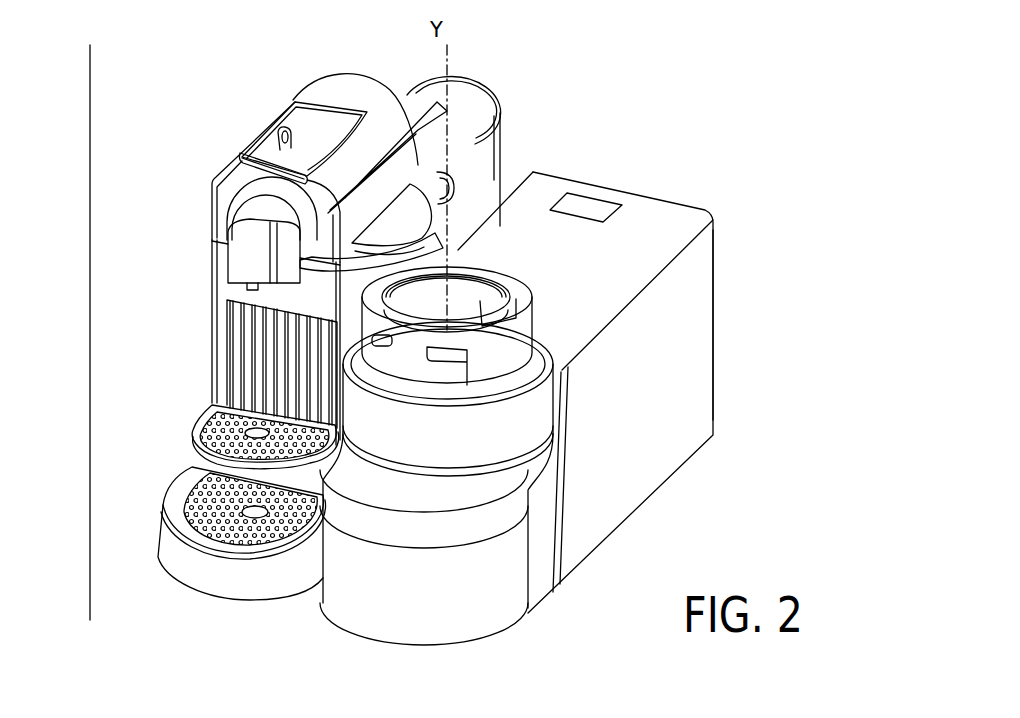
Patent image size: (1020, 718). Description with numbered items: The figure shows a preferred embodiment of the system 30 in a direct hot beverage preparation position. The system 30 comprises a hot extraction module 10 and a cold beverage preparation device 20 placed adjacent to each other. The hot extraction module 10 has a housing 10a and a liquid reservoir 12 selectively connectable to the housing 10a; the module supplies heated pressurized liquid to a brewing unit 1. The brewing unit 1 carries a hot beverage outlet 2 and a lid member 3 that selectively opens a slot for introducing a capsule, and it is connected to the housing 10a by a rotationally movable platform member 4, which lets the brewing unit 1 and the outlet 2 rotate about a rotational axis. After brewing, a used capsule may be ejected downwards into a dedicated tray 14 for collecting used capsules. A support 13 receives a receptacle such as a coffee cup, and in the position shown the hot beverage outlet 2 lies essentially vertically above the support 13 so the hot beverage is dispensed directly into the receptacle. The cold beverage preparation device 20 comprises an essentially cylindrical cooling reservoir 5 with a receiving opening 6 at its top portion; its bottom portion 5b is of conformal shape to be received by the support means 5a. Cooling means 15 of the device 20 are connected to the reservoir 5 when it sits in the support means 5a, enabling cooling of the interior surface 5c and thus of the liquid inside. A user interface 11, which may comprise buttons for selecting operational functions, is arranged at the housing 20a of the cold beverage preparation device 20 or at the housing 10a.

The brewing unit 1 is at (342, 80).
The hot beverage outlet 2 is at (247, 283).
The lid member 3 is at (312, 120).
The platform member 4 is at (403, 222).
The cooling reservoir 5 is at (503, 420).
The support means 5a is at (438, 497).
The bottom portion 5b is at (468, 483).
The interior surface 5c is at (420, 450).
The receiving opening 6 is at (465, 308).
The hot extraction module 10 is at (182, 188).
The housing 10a is at (200, 565).
The user interface 11 is at (585, 208).
The liquid reservoir 12 is at (467, 113).
The support 13 is at (207, 427).
The tray 14 is at (247, 352).
The cooling means 15 is at (667, 391).
The cold beverage preparation device 20 is at (633, 369).
The housing 20a is at (713, 277).
The system 30 is at (90, 340).